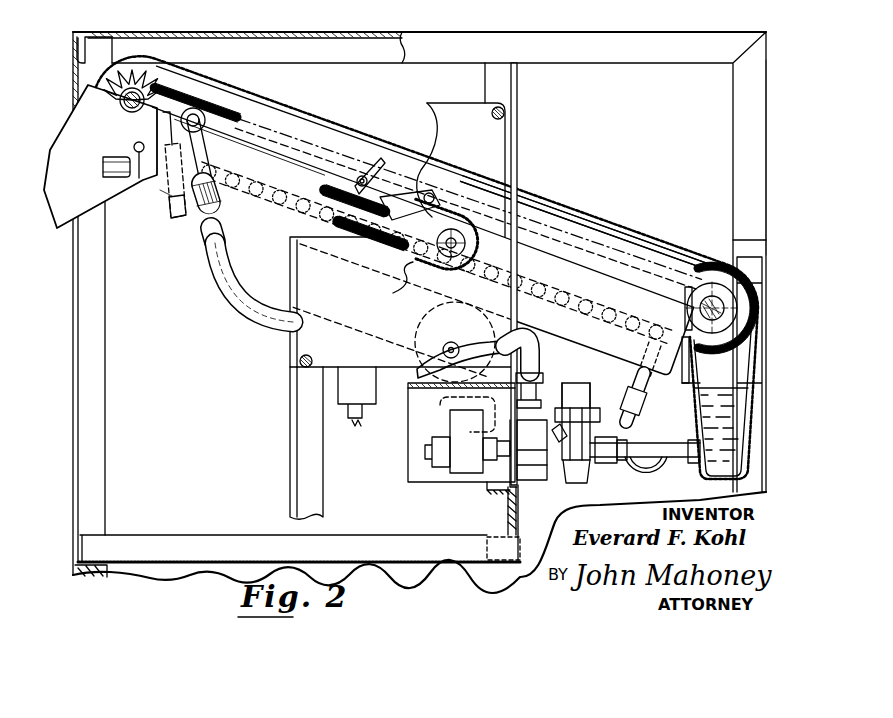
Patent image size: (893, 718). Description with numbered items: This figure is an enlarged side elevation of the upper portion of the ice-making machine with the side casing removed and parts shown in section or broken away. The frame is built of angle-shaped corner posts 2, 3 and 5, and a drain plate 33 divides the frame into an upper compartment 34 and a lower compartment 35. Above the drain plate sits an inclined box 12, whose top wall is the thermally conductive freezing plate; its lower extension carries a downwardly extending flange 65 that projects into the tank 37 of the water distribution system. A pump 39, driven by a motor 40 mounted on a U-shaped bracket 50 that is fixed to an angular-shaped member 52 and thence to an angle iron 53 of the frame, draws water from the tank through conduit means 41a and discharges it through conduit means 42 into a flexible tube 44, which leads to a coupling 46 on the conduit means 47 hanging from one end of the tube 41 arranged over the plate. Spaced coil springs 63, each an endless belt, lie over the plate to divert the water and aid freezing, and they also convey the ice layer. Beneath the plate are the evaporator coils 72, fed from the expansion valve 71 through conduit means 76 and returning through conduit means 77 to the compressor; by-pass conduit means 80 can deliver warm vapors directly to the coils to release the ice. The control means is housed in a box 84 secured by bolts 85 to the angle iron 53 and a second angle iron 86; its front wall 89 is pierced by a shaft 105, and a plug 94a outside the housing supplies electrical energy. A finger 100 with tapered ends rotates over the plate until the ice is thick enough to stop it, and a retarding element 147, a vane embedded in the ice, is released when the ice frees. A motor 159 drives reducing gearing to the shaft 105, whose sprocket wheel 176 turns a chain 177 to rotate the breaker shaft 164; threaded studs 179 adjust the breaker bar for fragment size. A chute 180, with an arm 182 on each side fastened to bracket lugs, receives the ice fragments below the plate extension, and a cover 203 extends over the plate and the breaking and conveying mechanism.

The corner post 2 is at (73, 383).
The corner post 3 is at (767, 258).
The corner post 5 is at (760, 192).
The box 12 is at (271, 238).
The drain plate 33 is at (418, 570).
The upper compartment 34 is at (123, 492).
The lower compartment 35 is at (150, 569).
The tank 37 is at (747, 433).
The pump 39 is at (540, 478).
The motor 40 is at (458, 467).
The tube 41 is at (258, 108).
The conduit means 41a is at (631, 466).
The conduit means 42 is at (538, 352).
The flexible tube 44 is at (222, 252).
The coupling 46 is at (205, 238).
The conduit means 47 is at (228, 132).
The U-shaped bracket 50 is at (403, 462).
The angular-shaped member 52 is at (507, 511).
The angle iron 53 is at (518, 82).
The coil springs 63 is at (682, 257).
The flange 65 is at (697, 350).
The expansion valve 71 is at (563, 386).
The coils 72 is at (607, 292).
The conduit means 76 is at (640, 388).
The conduit means 77 is at (165, 228).
The conduit means 80 is at (612, 427).
The box 84 is at (450, 103).
The bolts 85 is at (505, 114).
The angle iron 86 is at (303, 477).
The front wall 89 is at (493, 140).
The plug 94a is at (337, 403).
The finger 100 is at (362, 140).
The shaft 105 is at (405, 291).
The retarding element 147 is at (420, 172).
The motor 159 is at (417, 372).
The shaft 164 is at (124, 110).
The sprocket wheel 176 is at (460, 208).
The chain 177 is at (387, 283).
The threaded studs 179 is at (164, 206).
The chute 180 is at (57, 222).
The arm 182 is at (101, 172).
The cover 203 is at (600, 215).